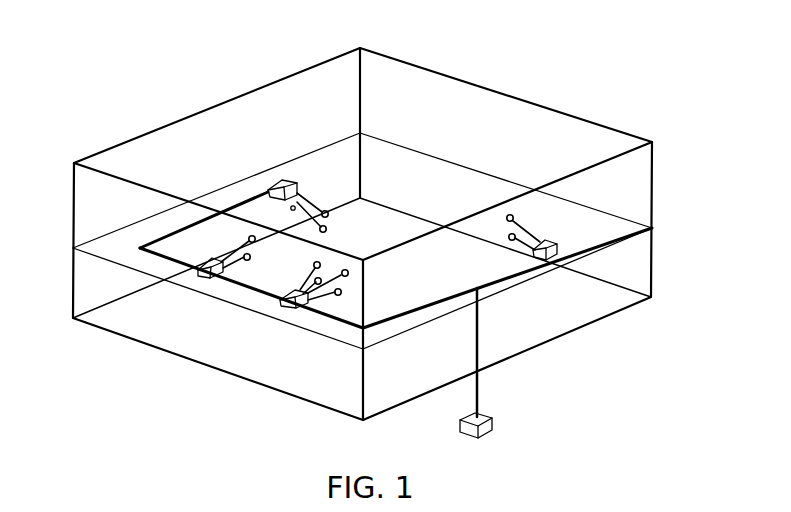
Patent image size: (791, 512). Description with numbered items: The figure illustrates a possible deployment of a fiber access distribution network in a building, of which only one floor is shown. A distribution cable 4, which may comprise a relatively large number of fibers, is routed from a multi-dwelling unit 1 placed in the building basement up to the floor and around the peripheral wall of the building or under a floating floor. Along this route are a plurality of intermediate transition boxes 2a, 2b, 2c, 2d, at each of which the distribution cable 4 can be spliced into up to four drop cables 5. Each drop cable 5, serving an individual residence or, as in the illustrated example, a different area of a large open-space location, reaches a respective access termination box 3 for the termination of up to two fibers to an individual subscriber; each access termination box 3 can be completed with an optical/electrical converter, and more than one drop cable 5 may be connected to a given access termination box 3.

The multi-dwelling unit 1 is at (492, 430).
The intermediate transition box 2a is at (550, 268).
The intermediate transition box 2b is at (280, 303).
The intermediate transition box 2c is at (198, 271).
The intermediate transition box 2d is at (282, 183).
The access termination box 3 is at (326, 210).
The distribution cable 4 is at (479, 385).
The drop cable 5 is at (312, 205).